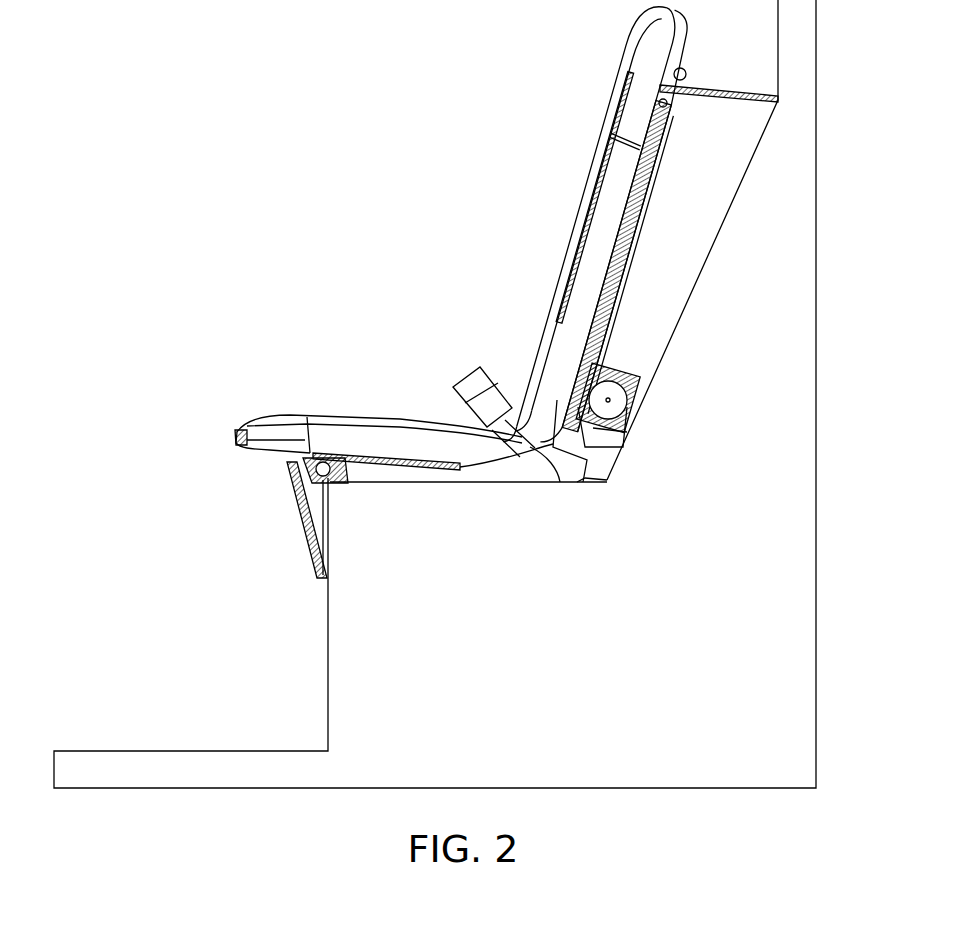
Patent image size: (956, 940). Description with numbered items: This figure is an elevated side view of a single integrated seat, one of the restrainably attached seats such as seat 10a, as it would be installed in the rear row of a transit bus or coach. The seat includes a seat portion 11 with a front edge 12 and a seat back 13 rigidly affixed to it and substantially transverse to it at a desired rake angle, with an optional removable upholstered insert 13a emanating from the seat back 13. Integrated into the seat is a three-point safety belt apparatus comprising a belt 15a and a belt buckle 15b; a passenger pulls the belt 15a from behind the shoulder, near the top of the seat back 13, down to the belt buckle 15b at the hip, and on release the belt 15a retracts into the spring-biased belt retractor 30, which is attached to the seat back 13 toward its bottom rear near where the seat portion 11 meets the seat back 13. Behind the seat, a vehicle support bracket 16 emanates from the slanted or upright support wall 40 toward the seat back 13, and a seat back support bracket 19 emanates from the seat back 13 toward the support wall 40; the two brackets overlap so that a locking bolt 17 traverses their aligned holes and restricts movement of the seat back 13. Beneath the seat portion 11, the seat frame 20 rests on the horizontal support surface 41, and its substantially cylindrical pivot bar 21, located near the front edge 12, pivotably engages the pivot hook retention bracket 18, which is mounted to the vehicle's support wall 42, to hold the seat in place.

The seat 10a is at (398, 199).
The seat portion 11 is at (393, 418).
The front edge 12 is at (245, 450).
The seat back 13 is at (580, 208).
The removable upholstered insert 13a is at (562, 273).
The belt 15a is at (637, 243).
The belt buckle 15b is at (475, 382).
The vehicle support bracket 16 is at (723, 99).
The locking bolt 17 is at (680, 82).
The pivot hook retention bracket 18 is at (303, 512).
The seat back support bracket 19 is at (664, 106).
The seat frame 20 is at (440, 487).
The pivot bar 21 is at (347, 484).
The belt retractor 30 is at (628, 401).
The support wall 40 is at (700, 290).
The horizontal support surface 41 is at (583, 486).
The support wall 42 is at (327, 618).